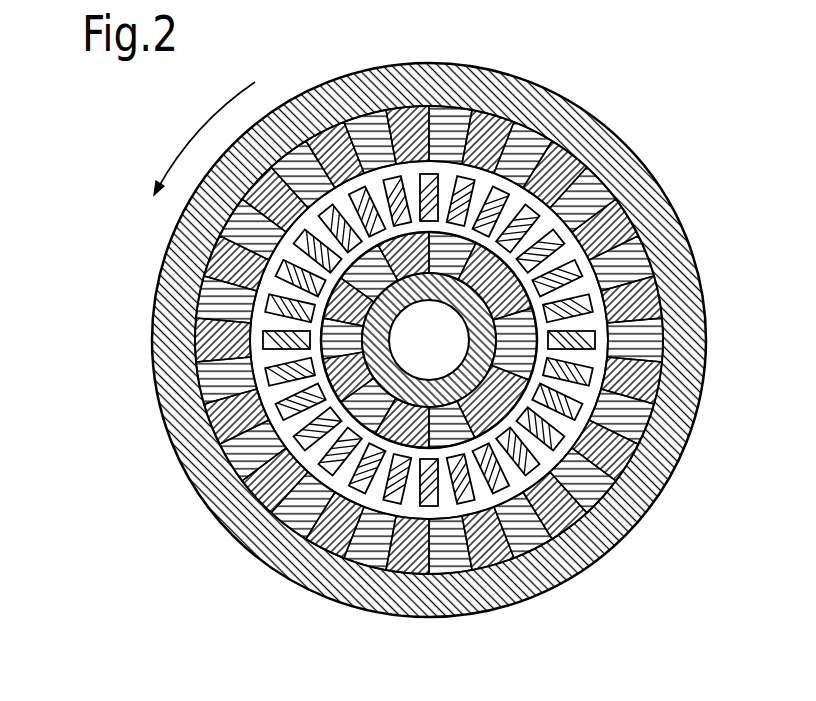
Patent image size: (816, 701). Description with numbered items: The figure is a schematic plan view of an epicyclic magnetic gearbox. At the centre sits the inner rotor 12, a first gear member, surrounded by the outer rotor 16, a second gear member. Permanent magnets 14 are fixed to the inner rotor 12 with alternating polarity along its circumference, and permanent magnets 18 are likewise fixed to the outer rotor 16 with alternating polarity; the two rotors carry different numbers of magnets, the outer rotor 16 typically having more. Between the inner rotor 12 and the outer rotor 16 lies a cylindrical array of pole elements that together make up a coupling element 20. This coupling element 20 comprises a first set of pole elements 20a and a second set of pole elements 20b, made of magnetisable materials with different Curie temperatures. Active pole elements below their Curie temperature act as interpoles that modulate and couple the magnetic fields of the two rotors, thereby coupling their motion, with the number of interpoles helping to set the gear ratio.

The inner rotor 12 is at (399, 383).
The permanent magnets 14 is at (665, 470).
The outer rotor 16 is at (183, 417).
The permanent magnets 18 is at (647, 338).
The coupling element 20 is at (561, 251).
The first set of pole elements 20a is at (435, 182).
The second set of pole elements 20b is at (396, 185).